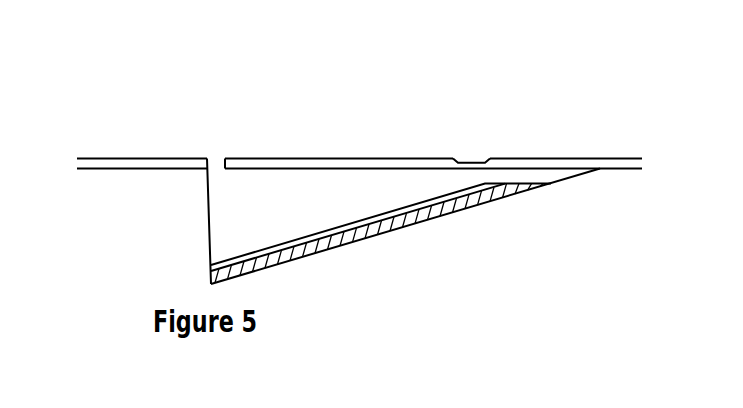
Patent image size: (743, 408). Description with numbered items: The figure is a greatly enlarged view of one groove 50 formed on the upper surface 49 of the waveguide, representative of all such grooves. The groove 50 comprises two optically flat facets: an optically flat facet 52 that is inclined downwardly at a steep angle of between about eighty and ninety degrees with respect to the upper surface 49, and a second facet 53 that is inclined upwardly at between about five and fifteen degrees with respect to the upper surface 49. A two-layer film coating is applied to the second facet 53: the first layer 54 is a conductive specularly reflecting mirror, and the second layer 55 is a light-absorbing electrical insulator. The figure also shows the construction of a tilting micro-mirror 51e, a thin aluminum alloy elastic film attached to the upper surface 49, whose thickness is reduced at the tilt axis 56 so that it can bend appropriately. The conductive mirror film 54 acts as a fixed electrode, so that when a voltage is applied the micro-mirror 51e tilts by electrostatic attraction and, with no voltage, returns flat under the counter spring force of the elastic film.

The upper surface 49 is at (613, 170).
The groove 50 is at (454, 130).
The tilting micro-mirror 51e is at (357, 159).
The optically flat facet 52 is at (207, 227).
The second facet 53 is at (472, 207).
The first layer 54 is at (388, 230).
The second layer 55 is at (318, 240).
The tilt axis 56 is at (470, 162).